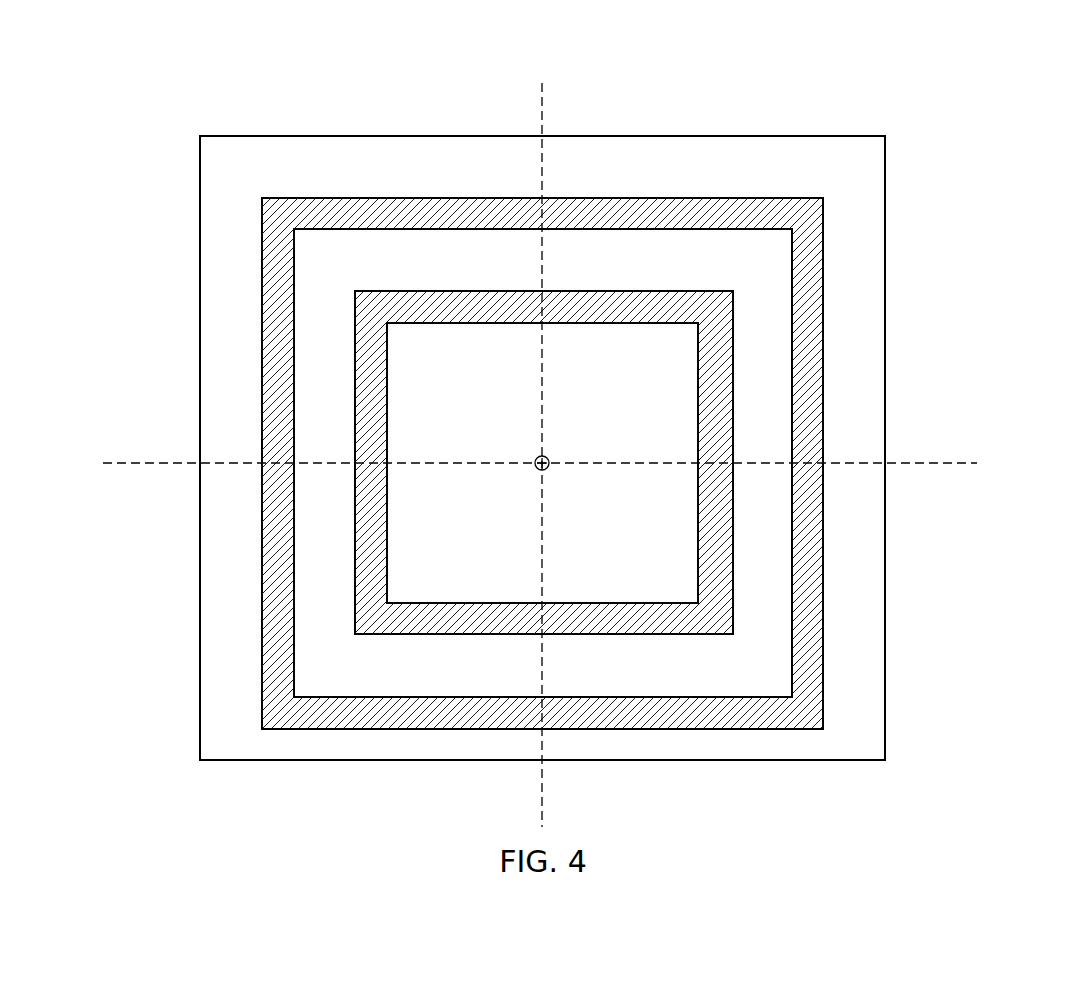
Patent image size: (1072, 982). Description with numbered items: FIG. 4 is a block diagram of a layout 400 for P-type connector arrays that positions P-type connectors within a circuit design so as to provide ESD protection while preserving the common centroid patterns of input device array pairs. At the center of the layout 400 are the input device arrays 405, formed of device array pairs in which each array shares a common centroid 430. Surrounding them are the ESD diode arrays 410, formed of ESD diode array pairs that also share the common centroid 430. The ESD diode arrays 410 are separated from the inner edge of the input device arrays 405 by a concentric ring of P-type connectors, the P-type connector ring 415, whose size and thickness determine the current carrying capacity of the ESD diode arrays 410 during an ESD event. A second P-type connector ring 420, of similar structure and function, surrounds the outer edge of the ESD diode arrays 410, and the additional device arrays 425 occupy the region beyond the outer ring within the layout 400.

The layout 400 is at (308, 51).
The input device arrays 405 is at (603, 372).
The ESD diode arrays 410 is at (318, 488).
The P-type connector ring 415 is at (718, 385).
The P-type connector ring 420 is at (278, 352).
The additional device arrays 425 is at (238, 233).
The common centroid 430 is at (549, 466).